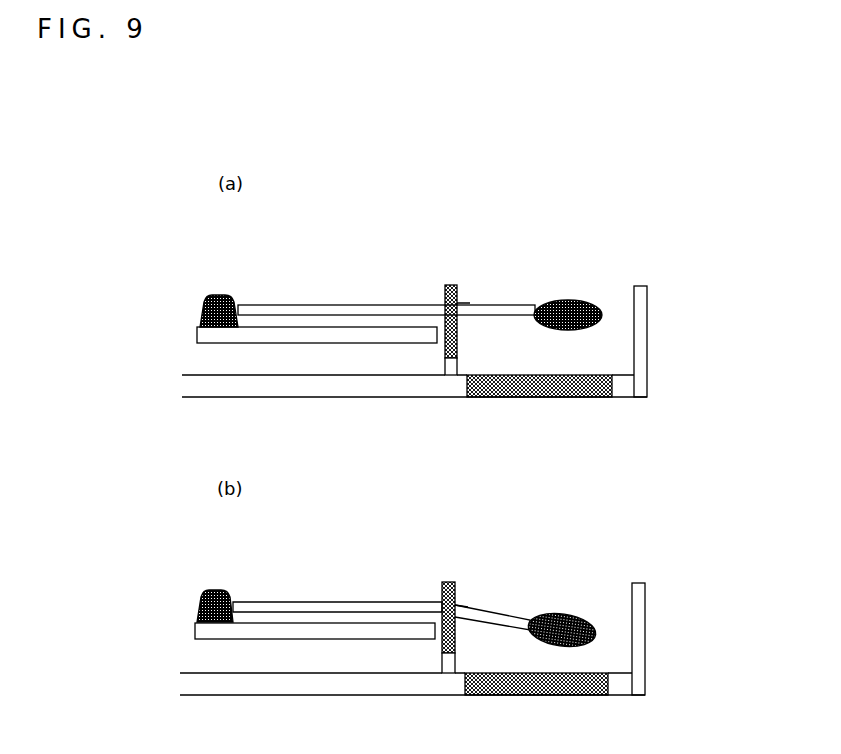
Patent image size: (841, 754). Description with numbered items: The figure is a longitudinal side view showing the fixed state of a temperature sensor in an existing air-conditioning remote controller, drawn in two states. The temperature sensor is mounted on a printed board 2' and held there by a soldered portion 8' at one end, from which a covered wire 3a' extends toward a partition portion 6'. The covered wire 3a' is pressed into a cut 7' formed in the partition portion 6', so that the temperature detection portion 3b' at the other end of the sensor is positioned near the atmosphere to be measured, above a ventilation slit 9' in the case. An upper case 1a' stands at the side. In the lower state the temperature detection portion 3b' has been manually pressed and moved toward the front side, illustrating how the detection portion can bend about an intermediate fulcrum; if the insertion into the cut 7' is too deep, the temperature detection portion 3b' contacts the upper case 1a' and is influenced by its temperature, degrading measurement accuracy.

The upper case 1a' is at (678, 467).
The printed board 2' is at (277, 526).
The covered wire 3a' is at (384, 446).
The temperature detection portion 3b' is at (580, 452).
The partition portion 6' is at (483, 456).
The cut 7' is at (492, 430).
The soldered portion 8' is at (236, 438).
The ventilation slit 9' is at (539, 516).